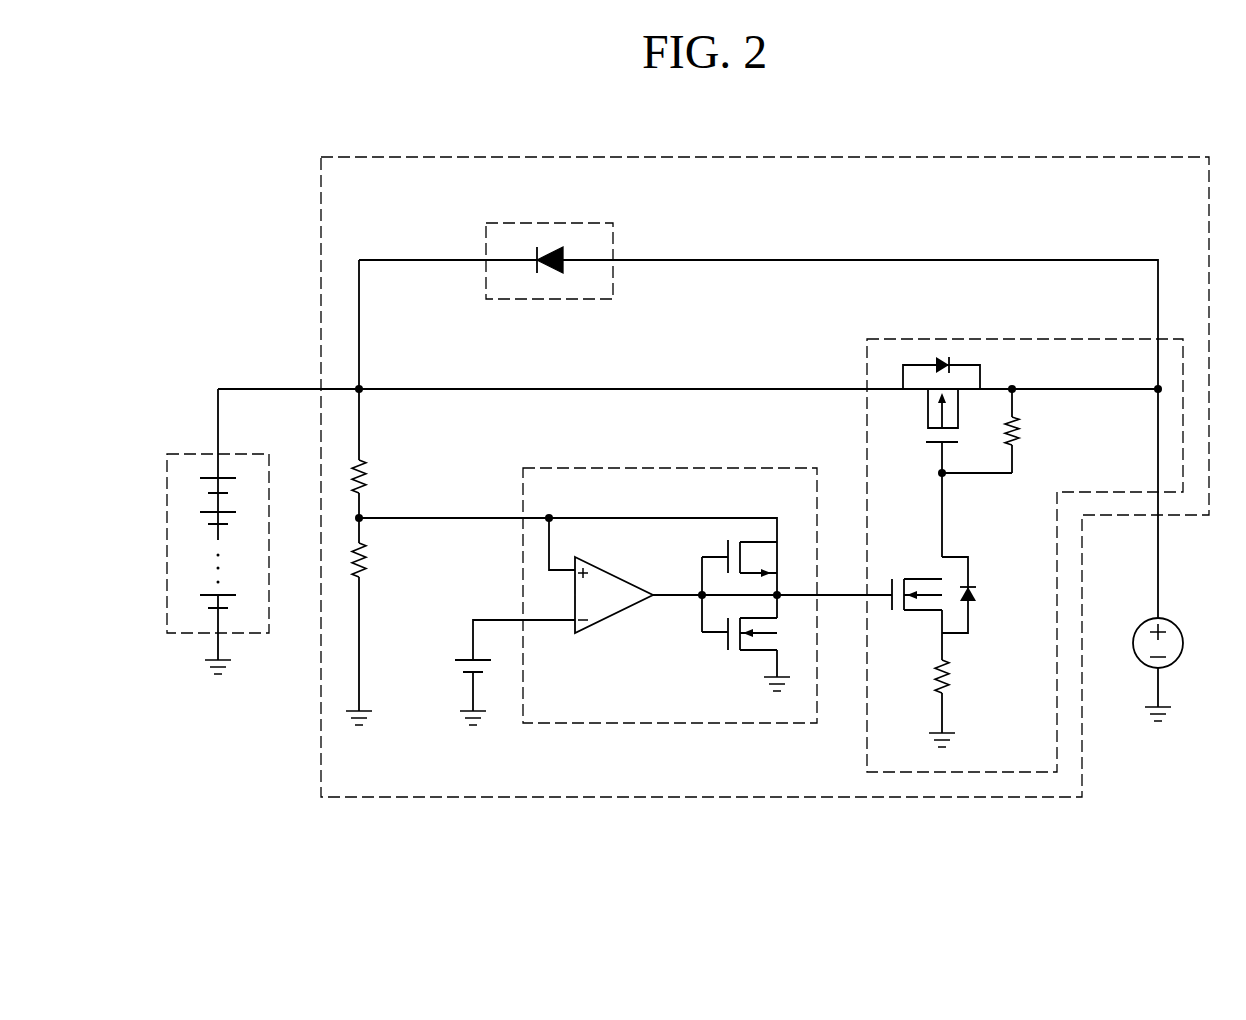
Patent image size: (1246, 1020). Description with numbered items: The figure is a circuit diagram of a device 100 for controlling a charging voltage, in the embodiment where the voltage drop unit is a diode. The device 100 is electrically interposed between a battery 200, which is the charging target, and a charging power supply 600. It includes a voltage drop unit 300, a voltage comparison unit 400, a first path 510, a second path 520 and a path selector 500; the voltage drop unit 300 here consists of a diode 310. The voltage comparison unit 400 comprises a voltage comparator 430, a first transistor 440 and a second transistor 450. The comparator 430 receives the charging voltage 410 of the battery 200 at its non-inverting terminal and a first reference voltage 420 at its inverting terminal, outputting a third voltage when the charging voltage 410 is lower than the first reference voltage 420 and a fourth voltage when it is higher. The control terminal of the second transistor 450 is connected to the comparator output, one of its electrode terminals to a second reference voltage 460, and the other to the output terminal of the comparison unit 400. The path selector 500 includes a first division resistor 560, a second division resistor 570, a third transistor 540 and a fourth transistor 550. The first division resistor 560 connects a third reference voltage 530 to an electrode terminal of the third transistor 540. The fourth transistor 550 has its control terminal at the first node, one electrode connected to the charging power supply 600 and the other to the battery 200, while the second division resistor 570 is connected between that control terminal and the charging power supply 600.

The device for controlling a charging voltage 100 is at (965, 157).
The battery 200 is at (193, 454).
The voltage drop unit 300 is at (550, 301).
The diode 310 is at (551, 249).
The voltage comparison unit 400 is at (625, 468).
The charging voltage 410 is at (465, 518).
The first reference voltage 420 is at (458, 668).
The voltage comparator 430 is at (612, 574).
The first transistor 440 is at (755, 542).
The second transistor 450 is at (753, 653).
The second reference voltage 460 is at (770, 694).
The path selector 500 is at (1023, 339).
The first path 510 is at (702, 389).
The second path 520 is at (882, 260).
The third reference voltage 530 is at (952, 733).
The third transistor 540 is at (915, 579).
The fourth transistor 550 is at (927, 412).
The first division resistor 560 is at (950, 672).
The second division resistor 570 is at (1022, 423).
The charging power supply 600 is at (1170, 617).